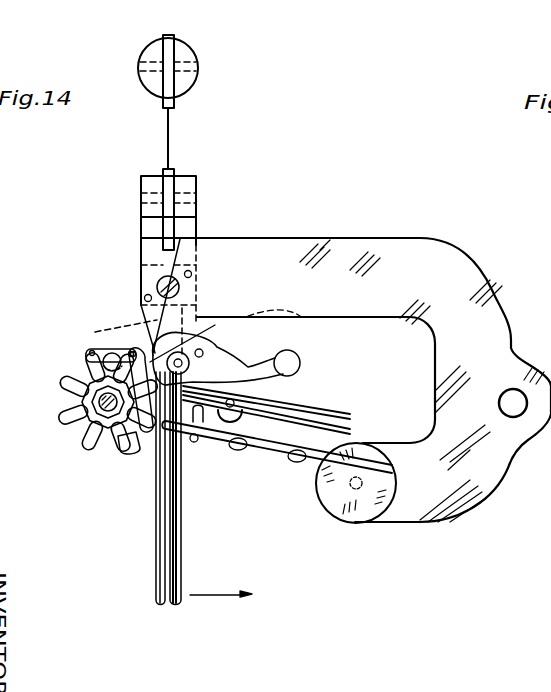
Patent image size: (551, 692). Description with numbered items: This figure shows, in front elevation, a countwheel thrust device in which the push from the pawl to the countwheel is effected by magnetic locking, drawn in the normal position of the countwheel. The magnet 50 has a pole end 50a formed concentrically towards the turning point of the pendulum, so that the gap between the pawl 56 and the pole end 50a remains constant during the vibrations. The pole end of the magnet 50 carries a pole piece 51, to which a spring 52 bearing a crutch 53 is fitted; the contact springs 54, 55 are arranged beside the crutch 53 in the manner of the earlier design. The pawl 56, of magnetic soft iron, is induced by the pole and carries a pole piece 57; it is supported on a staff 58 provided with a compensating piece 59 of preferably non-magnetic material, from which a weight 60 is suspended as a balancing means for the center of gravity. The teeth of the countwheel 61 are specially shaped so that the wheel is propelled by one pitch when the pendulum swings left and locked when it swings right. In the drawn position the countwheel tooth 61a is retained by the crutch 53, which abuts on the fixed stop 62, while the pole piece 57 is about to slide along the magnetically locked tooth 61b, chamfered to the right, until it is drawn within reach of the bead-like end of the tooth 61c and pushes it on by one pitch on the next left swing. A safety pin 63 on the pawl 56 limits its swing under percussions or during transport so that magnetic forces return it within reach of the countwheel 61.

The magnet 50 is at (457, 287).
The pole end 50a is at (148, 298).
The pole piece 51 is at (356, 512).
The spring 52 is at (280, 448).
The crutch 53 is at (220, 430).
The contact spring 54 is at (322, 410).
The contact spring 55 is at (338, 420).
The pawl 56 is at (122, 448).
The pole piece 57 is at (112, 360).
The staff 58 is at (205, 337).
The compensating piece 59 is at (250, 370).
The weight 60 is at (287, 363).
The countwheel 61 is at (78, 446).
The countwheel tooth 61a is at (155, 425).
The tooth 61b is at (90, 357).
The tooth 61c is at (133, 353).
The fixed stop 62 is at (194, 442).
The safety pin 63 is at (200, 330).